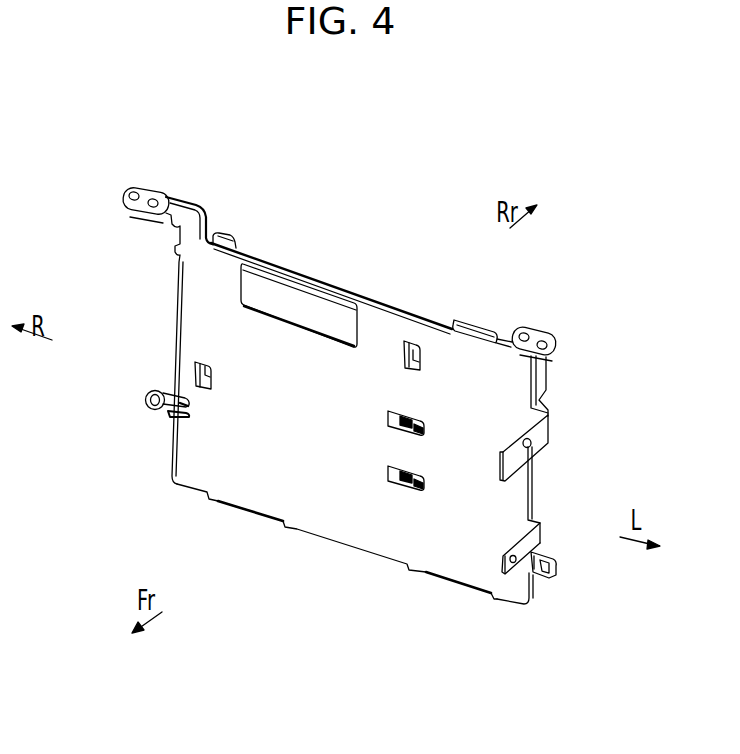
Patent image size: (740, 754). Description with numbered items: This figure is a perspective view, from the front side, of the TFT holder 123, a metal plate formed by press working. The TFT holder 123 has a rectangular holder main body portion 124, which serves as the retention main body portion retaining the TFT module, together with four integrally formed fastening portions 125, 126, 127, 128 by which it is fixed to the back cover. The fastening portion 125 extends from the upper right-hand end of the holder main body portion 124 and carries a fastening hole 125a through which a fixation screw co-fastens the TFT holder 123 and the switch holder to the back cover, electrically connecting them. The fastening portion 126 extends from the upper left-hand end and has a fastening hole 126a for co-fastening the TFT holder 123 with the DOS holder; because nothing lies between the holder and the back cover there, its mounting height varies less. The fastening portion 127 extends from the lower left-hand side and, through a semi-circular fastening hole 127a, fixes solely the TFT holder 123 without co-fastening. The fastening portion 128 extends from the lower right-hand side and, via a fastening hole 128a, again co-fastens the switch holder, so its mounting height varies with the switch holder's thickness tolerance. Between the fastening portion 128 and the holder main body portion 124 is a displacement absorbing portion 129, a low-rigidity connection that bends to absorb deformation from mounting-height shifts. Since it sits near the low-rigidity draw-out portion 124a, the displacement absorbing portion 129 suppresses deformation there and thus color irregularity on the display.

The TFT holder 123 is at (344, 262).
The holder main body portion 124 is at (270, 471).
The draw-out portion 124a is at (353, 543).
The fastening portion 125 is at (150, 189).
The fastening hole 125a is at (155, 214).
The fastening portion 126 is at (519, 330).
The fastening hole 126a is at (550, 348).
The fastening portion 127 is at (545, 588).
The semi-circular fastening hole 127a is at (556, 568).
The fastening portion 128 is at (155, 391).
The fastening hole 128a is at (145, 401).
The displacement absorbing portion 129 is at (170, 418).